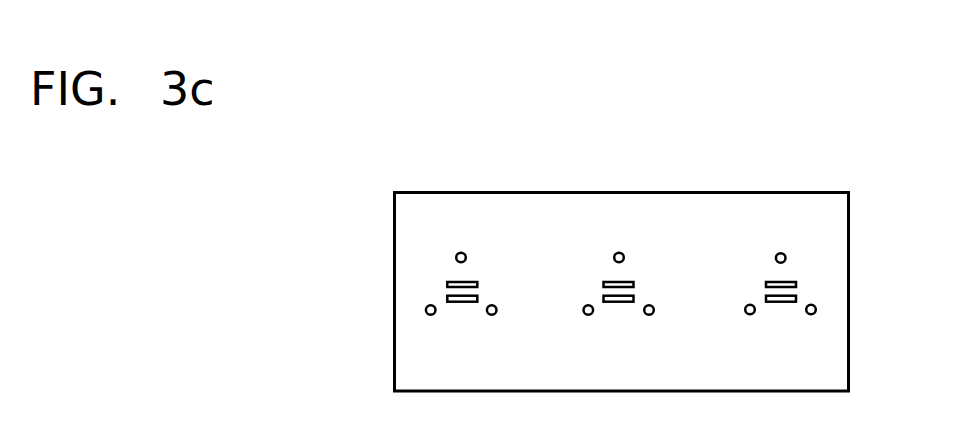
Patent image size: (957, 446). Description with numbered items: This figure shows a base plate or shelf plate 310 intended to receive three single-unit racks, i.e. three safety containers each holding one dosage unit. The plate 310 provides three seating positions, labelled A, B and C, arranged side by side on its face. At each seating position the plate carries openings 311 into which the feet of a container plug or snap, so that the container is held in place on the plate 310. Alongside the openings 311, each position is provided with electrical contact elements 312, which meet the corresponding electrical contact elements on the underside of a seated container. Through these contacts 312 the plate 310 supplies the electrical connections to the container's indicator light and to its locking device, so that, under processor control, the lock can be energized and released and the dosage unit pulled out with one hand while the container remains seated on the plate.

The base plate or shelf plate 310 is at (732, 236).
The openings 311 is at (462, 255).
The electrical contact elements 312 is at (613, 285).